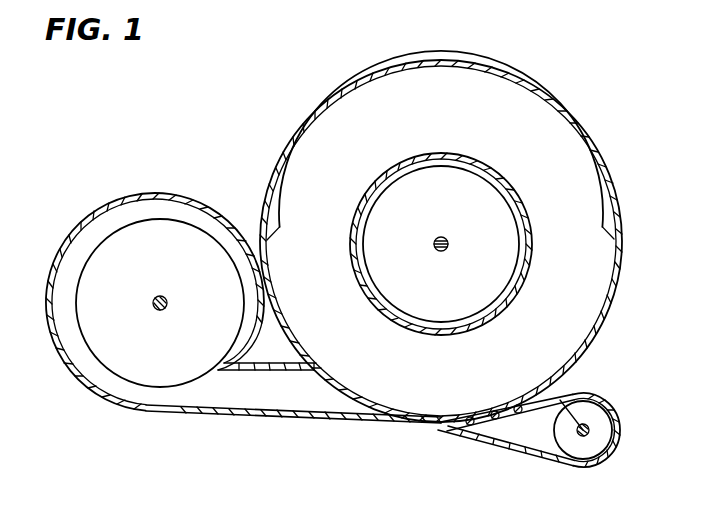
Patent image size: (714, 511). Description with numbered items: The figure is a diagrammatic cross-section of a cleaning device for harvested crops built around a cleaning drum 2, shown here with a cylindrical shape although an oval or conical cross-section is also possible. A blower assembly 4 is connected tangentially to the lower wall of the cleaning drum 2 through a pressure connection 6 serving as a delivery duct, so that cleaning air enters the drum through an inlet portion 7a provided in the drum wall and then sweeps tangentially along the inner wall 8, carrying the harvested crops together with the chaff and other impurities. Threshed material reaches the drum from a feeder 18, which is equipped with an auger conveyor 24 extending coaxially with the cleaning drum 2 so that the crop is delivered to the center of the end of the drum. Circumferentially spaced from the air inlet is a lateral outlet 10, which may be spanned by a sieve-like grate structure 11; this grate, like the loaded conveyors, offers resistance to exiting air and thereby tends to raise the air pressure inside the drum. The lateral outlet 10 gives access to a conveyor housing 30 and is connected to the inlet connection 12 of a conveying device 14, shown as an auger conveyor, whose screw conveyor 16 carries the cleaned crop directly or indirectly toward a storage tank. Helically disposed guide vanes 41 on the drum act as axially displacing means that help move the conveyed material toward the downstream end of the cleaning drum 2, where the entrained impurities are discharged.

The cleaning drum 2 is at (336, 84).
The blower assembly 4 is at (57, 245).
The pressure connection 6 is at (236, 396).
The inlet portion 7a is at (333, 393).
The inner wall 8 is at (309, 120).
The lateral outlet 10 is at (510, 413).
The grate structure 11 is at (519, 404).
The inlet connection 12 is at (508, 430).
The conveying device 14 is at (592, 385).
The screw conveyor 16 is at (598, 430).
The feeder 18 is at (441, 244).
The auger conveyor 24 is at (427, 215).
The conveyor housing 30 is at (616, 453).
The helically disposed guide vanes 41 is at (427, 76).